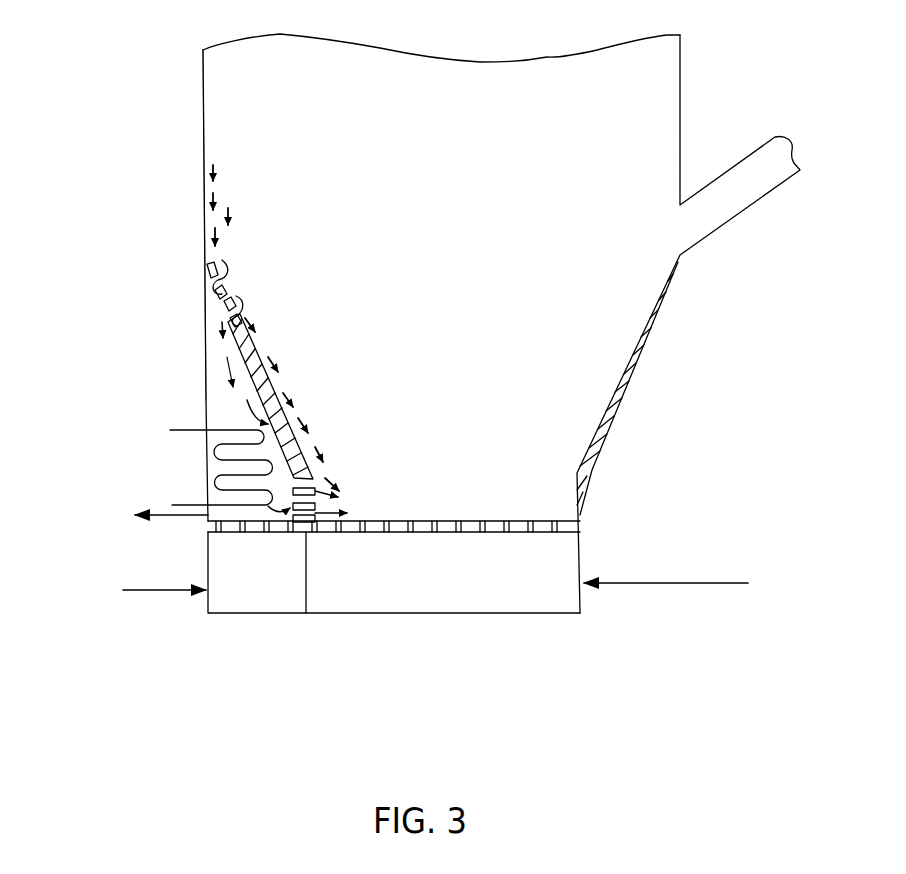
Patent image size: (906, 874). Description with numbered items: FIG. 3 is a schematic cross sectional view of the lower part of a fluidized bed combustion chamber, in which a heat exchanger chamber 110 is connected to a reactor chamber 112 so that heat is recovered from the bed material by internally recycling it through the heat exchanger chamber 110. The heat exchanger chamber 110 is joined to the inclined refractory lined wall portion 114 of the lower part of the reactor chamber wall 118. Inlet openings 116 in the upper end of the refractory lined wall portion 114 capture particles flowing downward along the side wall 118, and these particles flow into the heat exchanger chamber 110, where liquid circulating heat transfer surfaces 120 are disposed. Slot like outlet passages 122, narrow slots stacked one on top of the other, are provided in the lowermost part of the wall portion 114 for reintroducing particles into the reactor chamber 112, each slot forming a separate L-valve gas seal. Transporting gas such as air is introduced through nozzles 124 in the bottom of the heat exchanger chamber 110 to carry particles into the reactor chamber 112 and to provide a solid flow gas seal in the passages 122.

The heat exchanger chamber 110 is at (265, 468).
The reactor chamber 112 is at (525, 230).
The inclined refractory lined wall portion 114 is at (283, 390).
The inlet openings 116 is at (221, 278).
The reactor chamber wall 118 is at (204, 114).
The liquid circulating heat transfer surfaces 120 is at (222, 468).
The slot like outlet passages 122 is at (316, 480).
The nozzles 124 is at (277, 533).